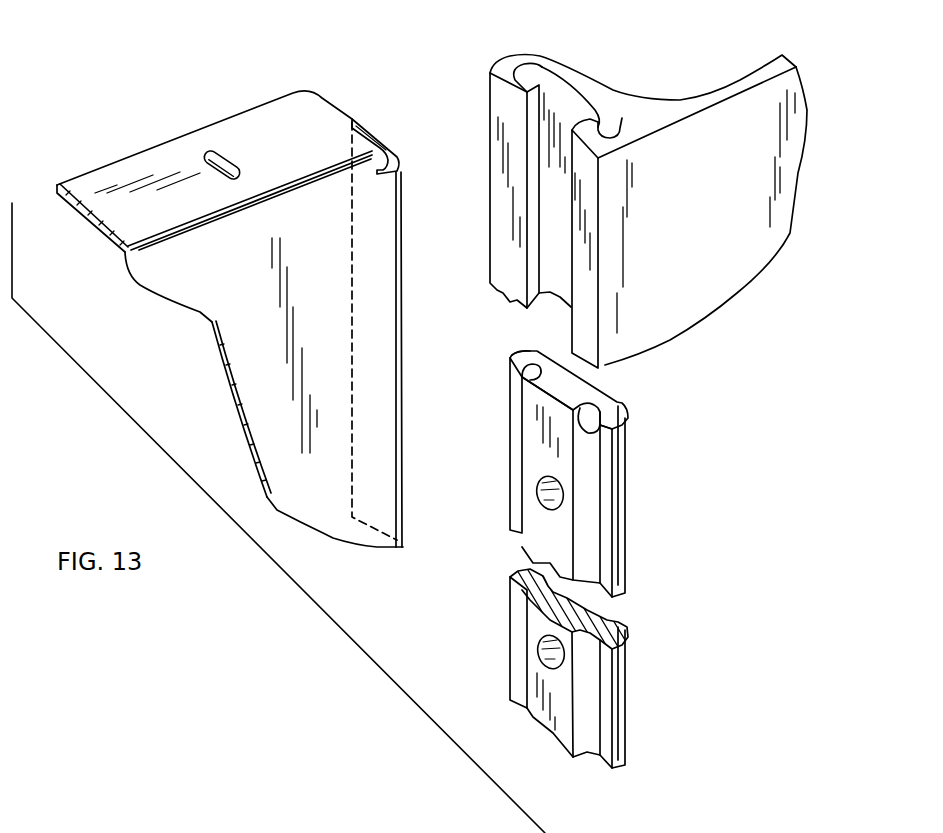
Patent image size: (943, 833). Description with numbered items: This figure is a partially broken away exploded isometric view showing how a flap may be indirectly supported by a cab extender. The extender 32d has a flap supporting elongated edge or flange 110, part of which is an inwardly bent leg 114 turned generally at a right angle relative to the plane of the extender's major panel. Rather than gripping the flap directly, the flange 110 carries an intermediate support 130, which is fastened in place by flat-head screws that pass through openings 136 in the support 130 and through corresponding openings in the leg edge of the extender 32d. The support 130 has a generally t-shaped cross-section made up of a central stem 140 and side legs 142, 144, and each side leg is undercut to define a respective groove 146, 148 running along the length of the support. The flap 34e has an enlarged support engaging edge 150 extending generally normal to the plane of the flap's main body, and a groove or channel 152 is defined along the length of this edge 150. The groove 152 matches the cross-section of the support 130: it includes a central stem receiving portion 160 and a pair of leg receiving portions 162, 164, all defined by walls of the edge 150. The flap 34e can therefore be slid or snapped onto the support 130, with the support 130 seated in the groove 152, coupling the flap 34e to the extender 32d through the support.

The extender 32d is at (248, 137).
The flap supporting elongated edge or flange 110 is at (375, 117).
The second leg 114 is at (377, 137).
The enlarged support engaging edge 150 is at (640, 189).
The groove or channel 152 is at (555, 183).
The leg receiving portion 164 is at (522, 70).
The central stem receiving portion 160 is at (550, 243).
The leg receiving portion 162 is at (614, 125).
The flap 34e is at (752, 240).
The intermediate support 130 is at (598, 540).
The side leg 144 is at (525, 352).
The groove 148 is at (530, 372).
The central stem 140 is at (557, 393).
The side leg 142 is at (615, 410).
The groove 146 is at (583, 427).
The openings 136 is at (540, 498).